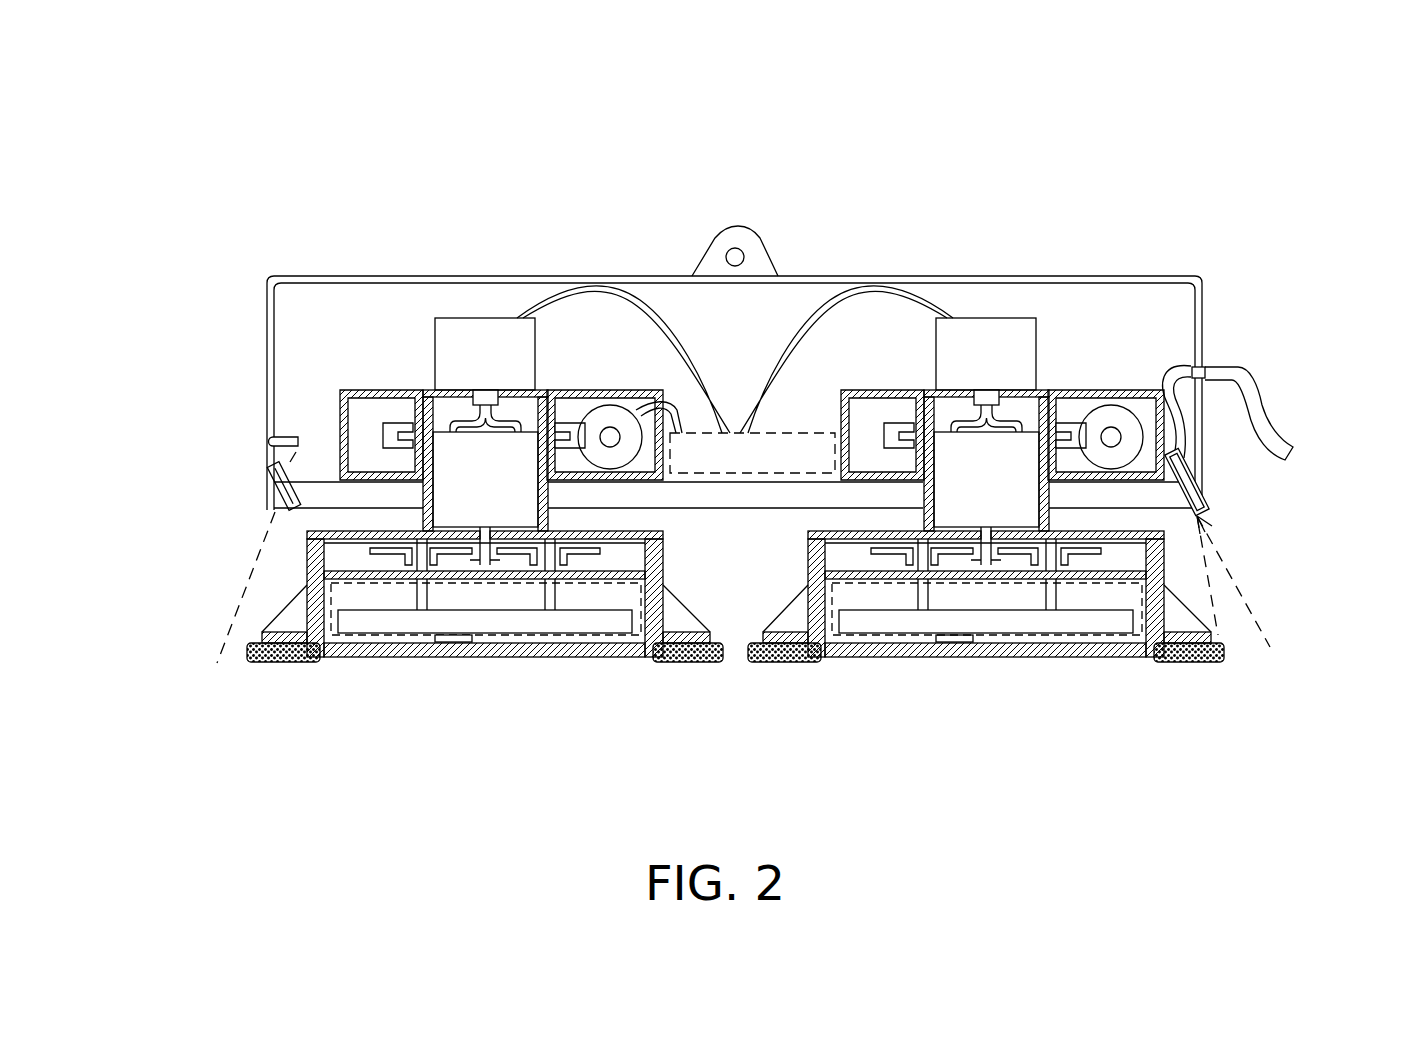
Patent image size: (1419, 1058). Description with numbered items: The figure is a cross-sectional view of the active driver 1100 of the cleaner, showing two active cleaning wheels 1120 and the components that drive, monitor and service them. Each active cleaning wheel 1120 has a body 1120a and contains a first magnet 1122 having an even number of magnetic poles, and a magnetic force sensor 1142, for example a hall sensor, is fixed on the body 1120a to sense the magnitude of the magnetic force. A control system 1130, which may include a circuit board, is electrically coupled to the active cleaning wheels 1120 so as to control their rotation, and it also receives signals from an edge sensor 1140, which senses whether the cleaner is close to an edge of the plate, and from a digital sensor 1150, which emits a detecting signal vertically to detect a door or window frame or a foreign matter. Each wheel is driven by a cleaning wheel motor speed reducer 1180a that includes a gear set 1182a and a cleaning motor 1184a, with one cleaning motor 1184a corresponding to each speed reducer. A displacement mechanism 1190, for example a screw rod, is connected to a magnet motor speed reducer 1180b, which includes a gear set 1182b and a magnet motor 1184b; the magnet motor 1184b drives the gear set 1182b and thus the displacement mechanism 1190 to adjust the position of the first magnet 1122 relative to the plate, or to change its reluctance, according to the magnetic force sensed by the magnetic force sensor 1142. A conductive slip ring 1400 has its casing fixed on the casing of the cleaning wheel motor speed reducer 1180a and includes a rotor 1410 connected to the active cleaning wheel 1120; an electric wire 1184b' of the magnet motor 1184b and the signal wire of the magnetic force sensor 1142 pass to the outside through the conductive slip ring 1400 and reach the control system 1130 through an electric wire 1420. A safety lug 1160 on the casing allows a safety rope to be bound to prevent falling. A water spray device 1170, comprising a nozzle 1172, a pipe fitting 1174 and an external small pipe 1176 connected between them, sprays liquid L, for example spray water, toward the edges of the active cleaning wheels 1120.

The active driver 1100 is at (1043, 283).
The active cleaning wheel 1120 is at (307, 578).
The body of the active cleaning wheel 1120a is at (307, 551).
The first magnet 1122 is at (370, 625).
The control system 1130 is at (803, 443).
The edge sensor 1140 is at (283, 473).
The magnetic force sensor 1142 is at (453, 640).
The digital sensor 1150 is at (287, 438).
The safety lug 1160 is at (747, 243).
The water spray device 1170 is at (1355, 507).
The nozzle 1172 is at (1202, 492).
The pipe fitting 1174 is at (1204, 368).
The external small pipe 1176 is at (1257, 422).
The cleaning wheel motor speed reducer 1180a is at (693, 162).
The magnet motor speed reducer 1180b is at (125, 530).
The gear set 1182a is at (398, 423).
The gear set 1182b is at (337, 547).
The cleaning motor 1184a is at (620, 413).
The magnet motor 1184b is at (275, 347).
The electric wire 1184b' is at (426, 323).
The displacement mechanism 1190 is at (552, 597).
The conductive slip ring 1400 is at (465, 337).
The rotor 1410 is at (492, 393).
The electric wire 1420 is at (627, 293).
The liquid L is at (1228, 603).